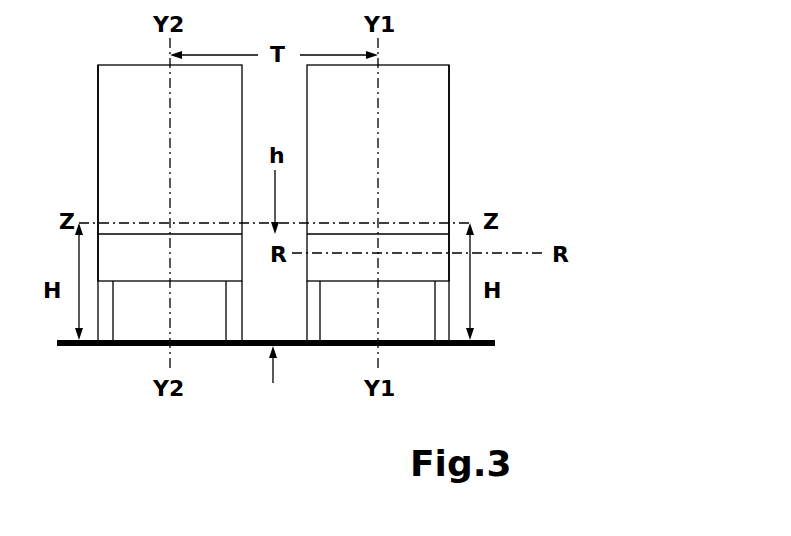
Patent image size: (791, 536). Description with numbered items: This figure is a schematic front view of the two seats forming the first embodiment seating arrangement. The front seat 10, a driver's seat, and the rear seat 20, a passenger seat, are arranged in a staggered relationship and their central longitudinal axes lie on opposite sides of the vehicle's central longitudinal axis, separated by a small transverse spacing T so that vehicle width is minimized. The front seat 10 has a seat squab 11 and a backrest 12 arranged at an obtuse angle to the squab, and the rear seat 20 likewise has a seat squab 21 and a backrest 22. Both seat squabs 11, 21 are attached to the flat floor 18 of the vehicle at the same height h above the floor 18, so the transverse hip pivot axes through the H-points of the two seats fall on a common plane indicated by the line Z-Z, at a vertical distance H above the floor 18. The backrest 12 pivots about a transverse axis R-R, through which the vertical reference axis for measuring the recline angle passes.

The front seat 10 is at (455, 106).
The backrest 12 is at (449, 160).
The seat squab 11 is at (403, 281).
The rear seat 20 is at (92, 106).
The backrest 22 is at (98, 155).
The seat squab 21 is at (141, 281).
The floor 18 is at (486, 340).